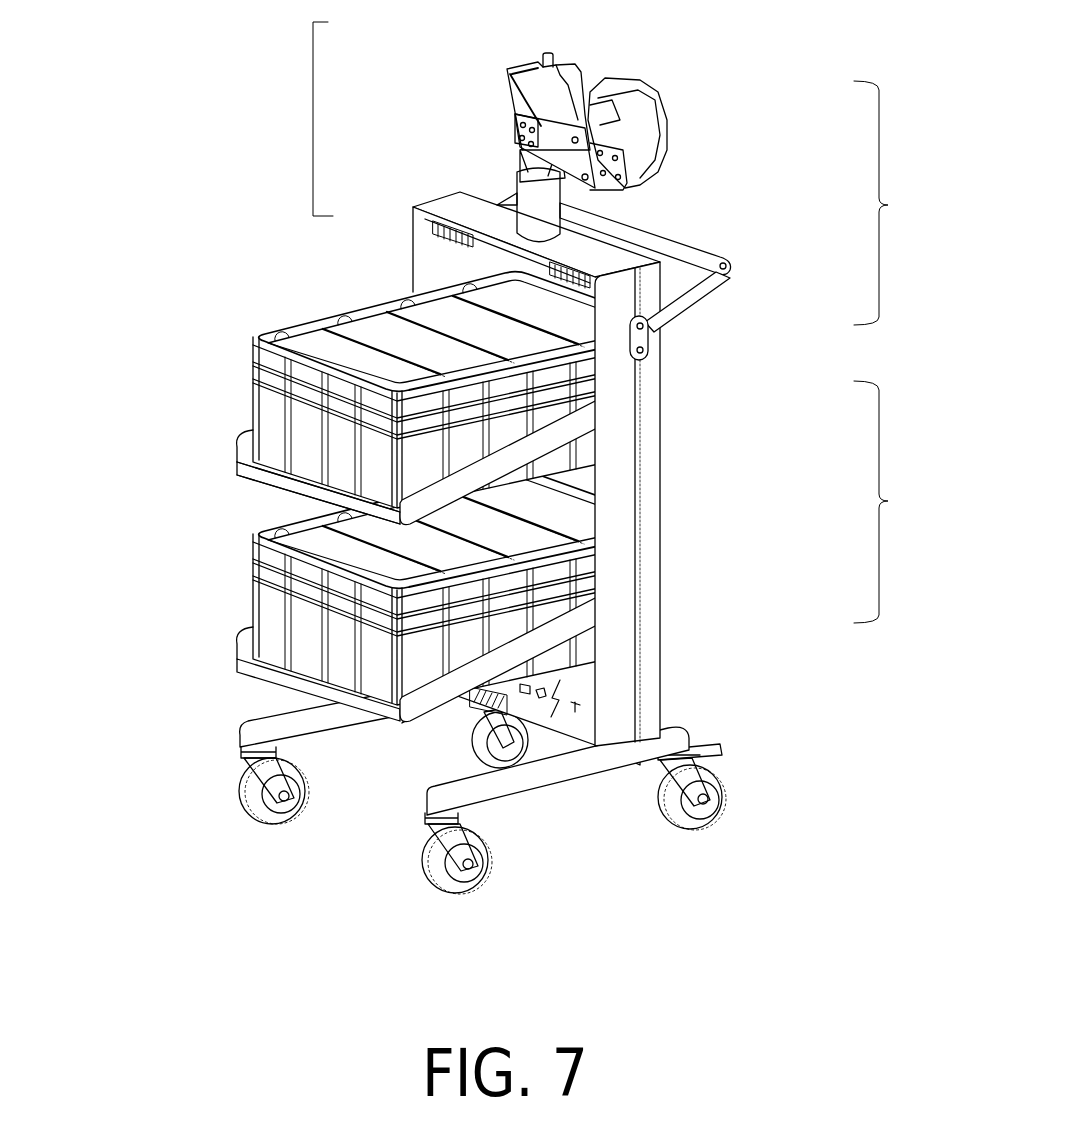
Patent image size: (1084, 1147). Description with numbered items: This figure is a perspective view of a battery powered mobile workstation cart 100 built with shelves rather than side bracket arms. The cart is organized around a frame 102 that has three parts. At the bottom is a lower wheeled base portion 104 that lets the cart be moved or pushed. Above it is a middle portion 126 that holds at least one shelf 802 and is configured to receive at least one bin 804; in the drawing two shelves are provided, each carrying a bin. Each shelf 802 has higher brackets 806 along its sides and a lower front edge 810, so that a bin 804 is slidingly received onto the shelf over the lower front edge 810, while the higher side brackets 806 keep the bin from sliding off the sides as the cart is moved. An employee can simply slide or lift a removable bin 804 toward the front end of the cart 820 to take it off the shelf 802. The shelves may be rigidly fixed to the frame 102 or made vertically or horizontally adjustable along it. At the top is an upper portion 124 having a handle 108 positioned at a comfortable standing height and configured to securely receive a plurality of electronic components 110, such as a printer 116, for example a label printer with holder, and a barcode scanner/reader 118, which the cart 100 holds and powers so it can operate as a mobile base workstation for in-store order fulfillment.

The battery powered mobile workstation cart 100 is at (183, 182).
The frame 102 is at (660, 415).
The lower wheeled base portion 104 is at (503, 780).
The handle 108 is at (677, 240).
The electronic components 110 is at (313, 123).
The printer 116 is at (667, 120).
The barcode scanner/reader 118 is at (503, 97).
The upper portion 124 is at (888, 205).
The middle portion 126 is at (888, 501).
The shelf 802 is at (266, 486).
The bin 804 is at (253, 403).
The higher brackets 806 is at (560, 650).
The lower front edge 810 is at (253, 460).
The front end of the cart 820 is at (170, 847).